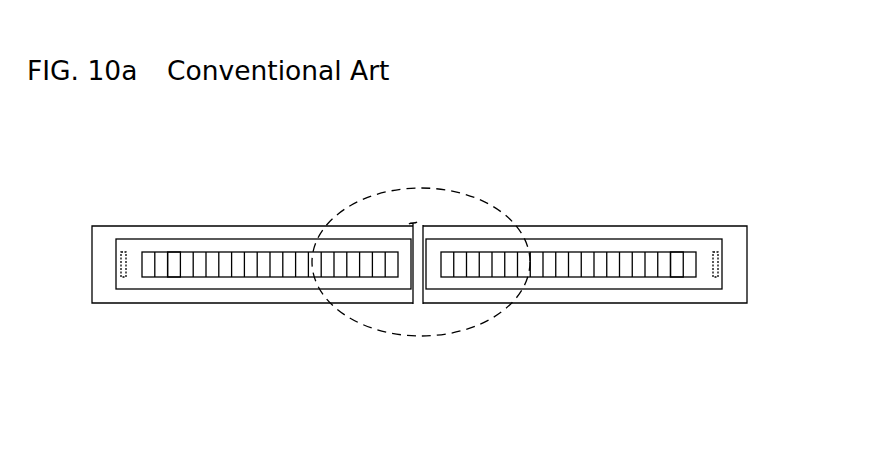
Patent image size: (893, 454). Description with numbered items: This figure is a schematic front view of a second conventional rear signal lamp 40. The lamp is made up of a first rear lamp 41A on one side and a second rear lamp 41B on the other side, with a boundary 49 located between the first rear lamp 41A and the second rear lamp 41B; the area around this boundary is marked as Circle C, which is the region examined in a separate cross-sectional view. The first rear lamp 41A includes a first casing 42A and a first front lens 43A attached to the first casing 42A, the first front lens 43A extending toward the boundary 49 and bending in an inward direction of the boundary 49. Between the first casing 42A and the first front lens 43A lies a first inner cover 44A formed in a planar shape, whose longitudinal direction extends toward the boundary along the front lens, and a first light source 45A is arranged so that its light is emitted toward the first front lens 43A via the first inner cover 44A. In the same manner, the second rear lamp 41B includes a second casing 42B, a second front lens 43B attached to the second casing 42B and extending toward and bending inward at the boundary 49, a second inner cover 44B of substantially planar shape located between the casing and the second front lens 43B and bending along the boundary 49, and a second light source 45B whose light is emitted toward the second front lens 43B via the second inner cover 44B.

The second conventional rear signal lamp 40 is at (534, 164).
The first rear lamp 41A is at (291, 228).
The second rear lamp 41B is at (549, 228).
The first casing 42A is at (253, 234).
The second casing 42B is at (603, 234).
The first front lens 43A is at (211, 248).
The second front lens 43B is at (640, 248).
The first inner cover 44A is at (174, 252).
The second inner cover 44B is at (678, 252).
The first light source 45A is at (122, 253).
The second light source 45B is at (714, 255).
The boundary 49 is at (417, 304).
The Circle C is at (485, 321).